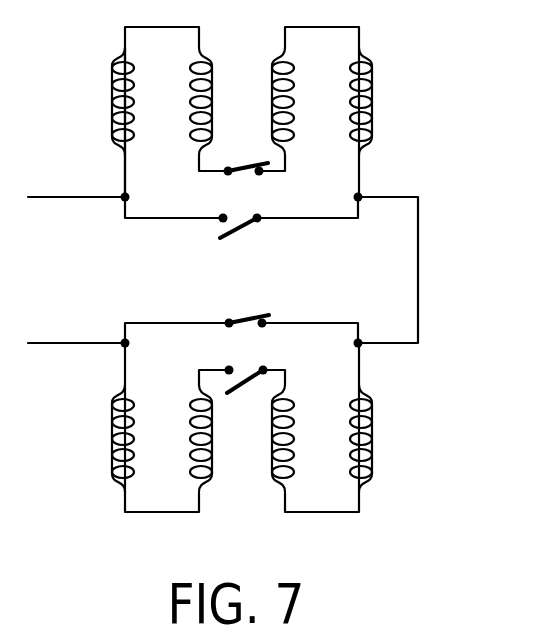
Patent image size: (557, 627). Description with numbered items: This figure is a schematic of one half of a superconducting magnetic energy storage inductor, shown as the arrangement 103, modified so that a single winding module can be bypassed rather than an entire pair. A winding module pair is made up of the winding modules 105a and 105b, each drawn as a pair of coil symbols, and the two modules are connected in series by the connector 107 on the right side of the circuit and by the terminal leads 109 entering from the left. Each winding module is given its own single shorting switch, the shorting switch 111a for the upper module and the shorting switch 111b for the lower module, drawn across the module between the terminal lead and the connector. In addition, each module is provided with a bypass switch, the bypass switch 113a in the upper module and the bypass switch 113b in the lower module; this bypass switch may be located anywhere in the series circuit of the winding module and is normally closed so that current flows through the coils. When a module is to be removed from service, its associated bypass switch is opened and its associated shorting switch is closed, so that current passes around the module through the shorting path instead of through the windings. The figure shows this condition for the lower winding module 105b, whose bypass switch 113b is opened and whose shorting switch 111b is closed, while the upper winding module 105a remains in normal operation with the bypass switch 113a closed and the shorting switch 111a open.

The switching circuit 103 is at (498, 281).
The winding module 105a is at (402, 78).
The winding module 105b is at (404, 449).
The connector 107 is at (418, 293).
The terminal leads 109 is at (53, 200).
The shorting switch 111a is at (237, 233).
The shorting switch 111b is at (248, 318).
The bypass switch 113a is at (249, 165).
The bypass switch 113b is at (246, 383).